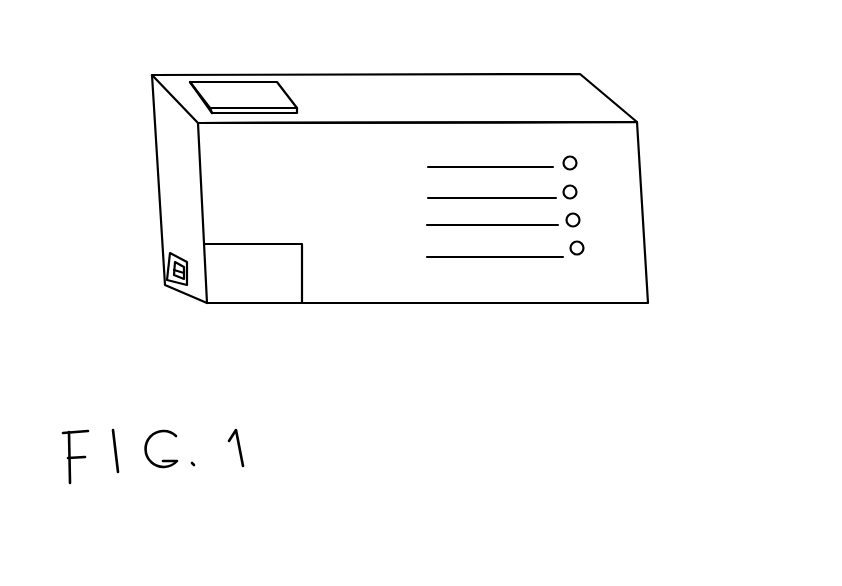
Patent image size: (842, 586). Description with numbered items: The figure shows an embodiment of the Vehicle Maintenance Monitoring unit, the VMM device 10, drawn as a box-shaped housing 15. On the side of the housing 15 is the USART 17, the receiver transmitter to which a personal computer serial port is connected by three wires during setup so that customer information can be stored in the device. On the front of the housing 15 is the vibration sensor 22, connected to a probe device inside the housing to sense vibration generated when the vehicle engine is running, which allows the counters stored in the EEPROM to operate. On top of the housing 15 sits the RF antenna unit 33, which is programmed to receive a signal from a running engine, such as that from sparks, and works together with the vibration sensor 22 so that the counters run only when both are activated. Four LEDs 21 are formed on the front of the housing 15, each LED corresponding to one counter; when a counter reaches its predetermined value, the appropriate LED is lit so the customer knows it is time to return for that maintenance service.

The VMM device 10 is at (360, 165).
The housing 15 is at (187, 182).
The USART 17 is at (165, 270).
The LEDs 21 is at (587, 260).
The vibration sensor 22 is at (293, 288).
The RF antenna unit 33 is at (250, 93).
The element LED is at (575, 255).